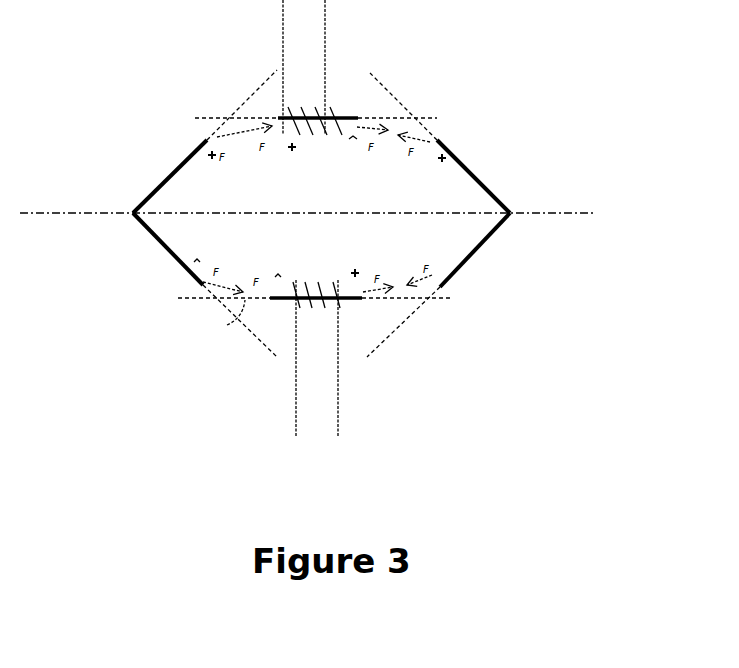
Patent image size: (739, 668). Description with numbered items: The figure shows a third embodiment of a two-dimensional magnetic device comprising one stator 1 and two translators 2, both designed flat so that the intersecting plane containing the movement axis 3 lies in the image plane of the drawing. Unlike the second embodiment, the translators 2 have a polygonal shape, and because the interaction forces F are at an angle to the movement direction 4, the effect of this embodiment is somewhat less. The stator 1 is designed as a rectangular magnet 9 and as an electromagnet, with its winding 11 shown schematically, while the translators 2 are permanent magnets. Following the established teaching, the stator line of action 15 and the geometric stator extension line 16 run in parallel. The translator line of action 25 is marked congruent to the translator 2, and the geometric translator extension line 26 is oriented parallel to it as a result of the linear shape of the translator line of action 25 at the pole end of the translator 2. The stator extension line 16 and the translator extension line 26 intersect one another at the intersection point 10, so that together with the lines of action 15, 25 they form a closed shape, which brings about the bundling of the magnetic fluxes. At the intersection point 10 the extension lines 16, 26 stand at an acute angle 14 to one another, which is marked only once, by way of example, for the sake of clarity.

The stator 1 is at (345, 75).
The translator 2 is at (147, 160).
The movement axis 3 is at (553, 213).
The movement direction 4 is at (628, 277).
The magnets 9 is at (327, 113).
The intersection point 10 is at (222, 110).
The winding 11 is at (298, 82).
The acute angle 14 is at (244, 313).
The stator line of action 15 is at (297, 110).
The geometric stator extension line 16 is at (200, 115).
The translator line of action 25 is at (178, 148).
The geometric translator extension line 26 is at (258, 85).